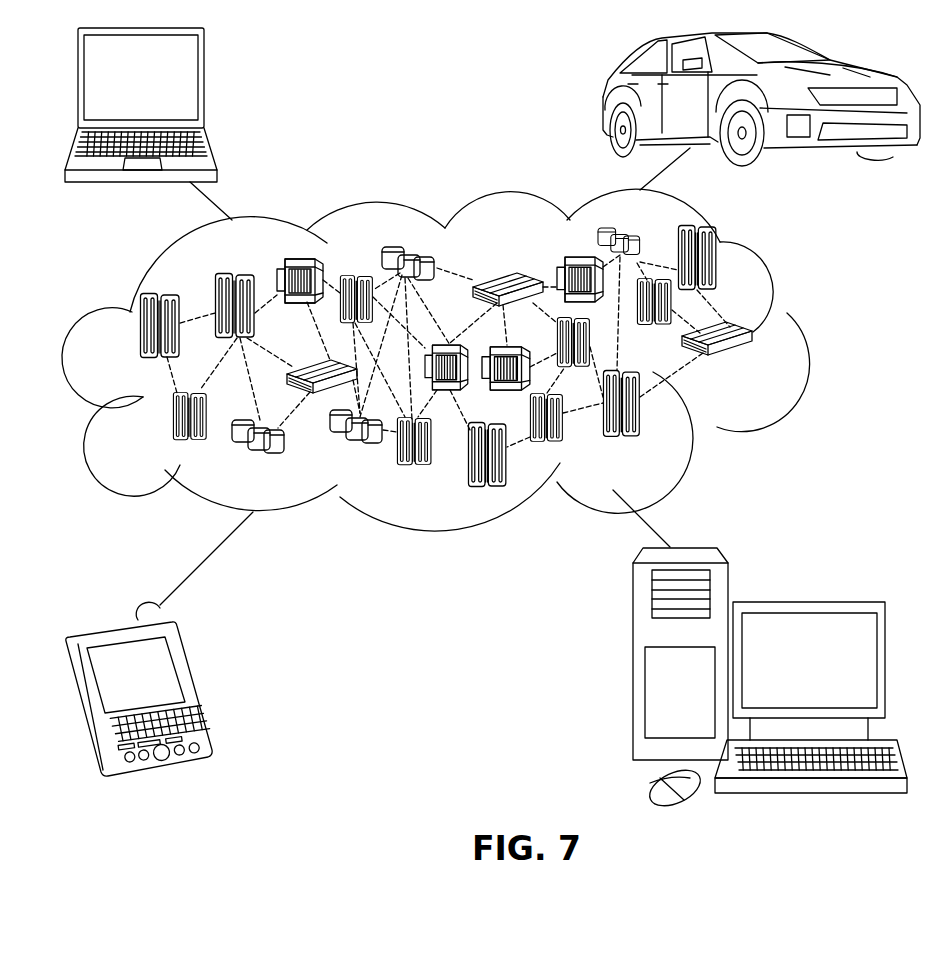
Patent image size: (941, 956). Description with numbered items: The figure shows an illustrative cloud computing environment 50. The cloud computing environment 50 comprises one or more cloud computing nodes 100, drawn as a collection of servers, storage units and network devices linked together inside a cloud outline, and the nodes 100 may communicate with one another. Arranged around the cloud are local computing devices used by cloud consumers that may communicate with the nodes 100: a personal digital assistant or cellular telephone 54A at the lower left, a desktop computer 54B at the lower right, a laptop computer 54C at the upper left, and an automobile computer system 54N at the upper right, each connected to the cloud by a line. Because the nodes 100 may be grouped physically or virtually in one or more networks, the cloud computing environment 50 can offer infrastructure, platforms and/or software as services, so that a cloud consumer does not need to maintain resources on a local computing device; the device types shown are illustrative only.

The laptop computer 54C is at (203, 86).
The automobile computer system 54N is at (608, 102).
The personal digital assistant (PDA) or cellular telephone 54A is at (193, 688).
The desktop computer 54B is at (805, 599).
The cloud computing environment 50 is at (807, 332).
The cloud computing nodes 100 is at (762, 366).